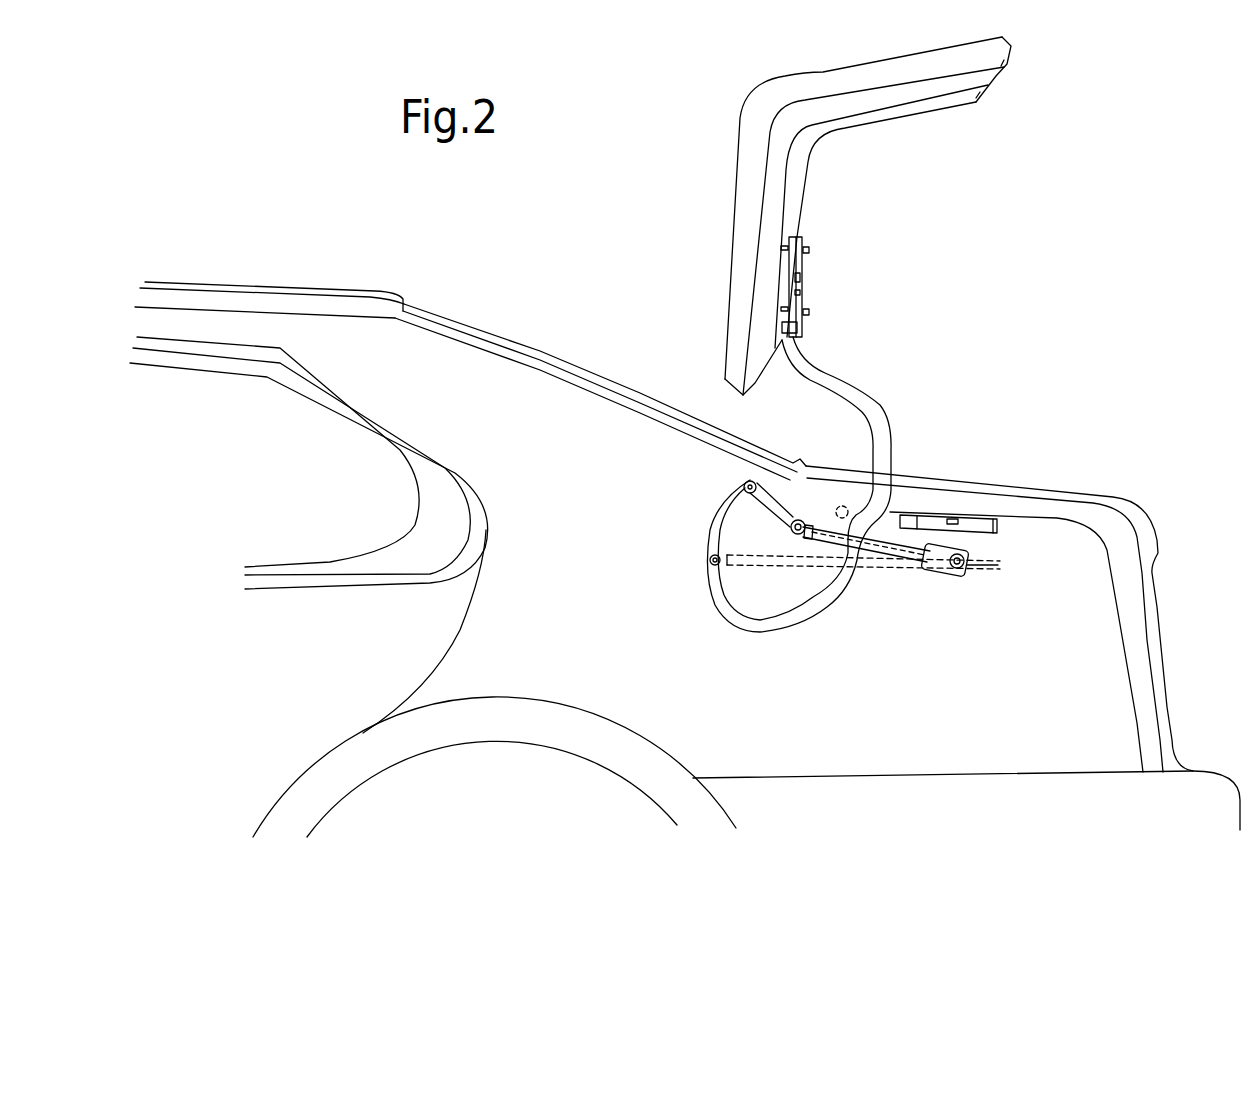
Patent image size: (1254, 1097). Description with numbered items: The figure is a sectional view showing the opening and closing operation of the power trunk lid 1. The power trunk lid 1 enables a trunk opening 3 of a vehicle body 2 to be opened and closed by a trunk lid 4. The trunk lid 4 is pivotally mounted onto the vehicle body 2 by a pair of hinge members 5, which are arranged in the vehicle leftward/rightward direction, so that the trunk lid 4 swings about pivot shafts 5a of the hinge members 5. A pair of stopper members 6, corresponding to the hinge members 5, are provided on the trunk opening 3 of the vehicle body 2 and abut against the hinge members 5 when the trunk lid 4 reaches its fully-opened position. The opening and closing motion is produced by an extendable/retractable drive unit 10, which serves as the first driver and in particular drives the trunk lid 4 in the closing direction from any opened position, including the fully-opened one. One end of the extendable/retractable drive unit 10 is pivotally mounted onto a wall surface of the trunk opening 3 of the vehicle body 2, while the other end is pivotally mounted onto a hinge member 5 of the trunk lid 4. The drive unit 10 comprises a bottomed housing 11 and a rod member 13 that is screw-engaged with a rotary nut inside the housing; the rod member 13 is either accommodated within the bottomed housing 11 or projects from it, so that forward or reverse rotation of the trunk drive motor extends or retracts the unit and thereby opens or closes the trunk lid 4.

The power trunk lid 1 is at (628, 254).
The vehicle body 2 is at (305, 330).
The trunk opening 3 is at (1057, 520).
The trunk lid 4 is at (895, 60).
The hinge member 5 is at (718, 538).
The pivot shaft 5a is at (745, 486).
The stopper member 6 is at (842, 506).
The extendable/retractable drive unit 10 is at (805, 666).
The bottomed housing 11 is at (889, 567).
The rod member 13 is at (800, 562).